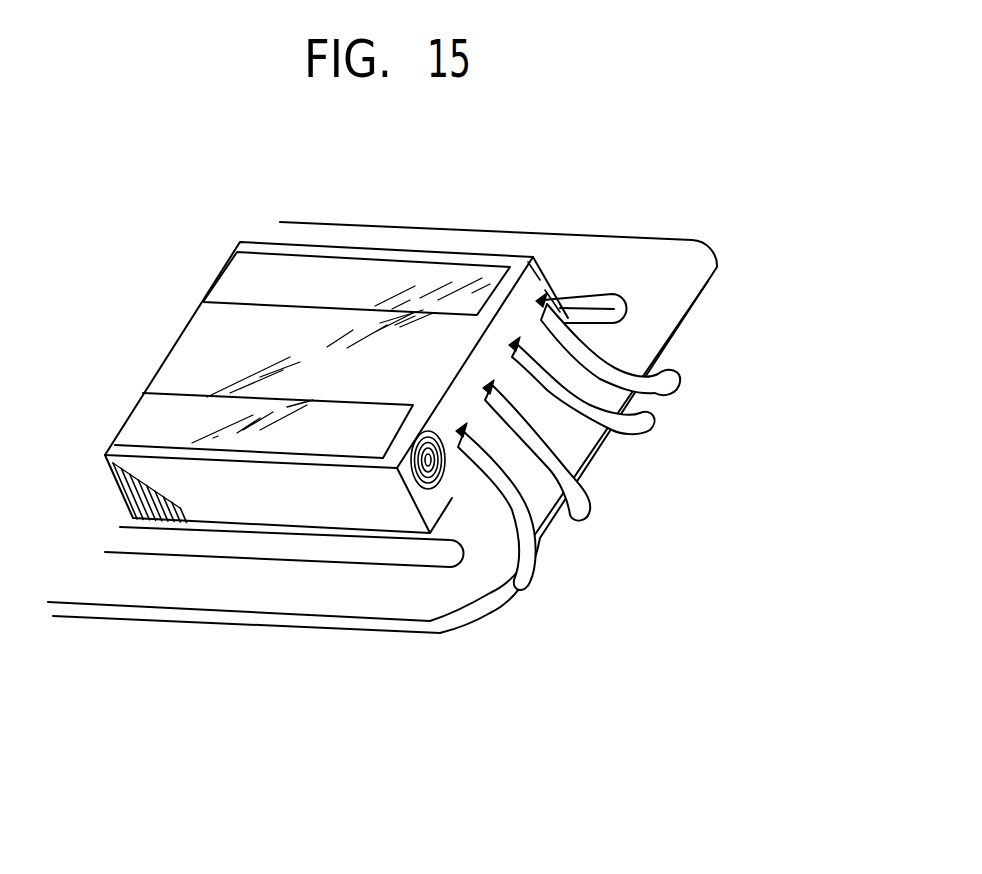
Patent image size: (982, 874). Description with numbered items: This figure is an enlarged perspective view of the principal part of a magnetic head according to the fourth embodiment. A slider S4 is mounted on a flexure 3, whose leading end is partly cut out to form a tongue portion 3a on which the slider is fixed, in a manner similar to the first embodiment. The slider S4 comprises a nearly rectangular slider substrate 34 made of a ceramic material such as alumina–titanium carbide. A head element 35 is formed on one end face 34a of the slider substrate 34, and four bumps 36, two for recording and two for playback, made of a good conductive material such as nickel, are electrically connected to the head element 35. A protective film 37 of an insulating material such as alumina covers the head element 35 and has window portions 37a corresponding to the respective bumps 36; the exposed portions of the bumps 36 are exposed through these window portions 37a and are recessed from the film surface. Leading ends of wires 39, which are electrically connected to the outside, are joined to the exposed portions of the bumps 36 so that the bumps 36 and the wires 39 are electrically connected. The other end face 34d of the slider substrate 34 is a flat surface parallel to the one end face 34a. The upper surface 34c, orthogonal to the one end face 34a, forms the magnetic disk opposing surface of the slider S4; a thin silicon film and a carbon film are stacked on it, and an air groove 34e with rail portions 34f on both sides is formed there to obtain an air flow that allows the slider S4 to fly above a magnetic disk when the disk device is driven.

The flexure 3 is at (720, 258).
The tongue portion 3a is at (268, 534).
The slider S4 is at (288, 425).
The slider substrate 34 is at (186, 316).
The one end face 34a is at (528, 280).
The upper surface 34c is at (223, 300).
The other end face 34d is at (120, 493).
The air groove 34e is at (263, 338).
The rail portions 34f is at (330, 423).
The head element 35 is at (436, 488).
The bumps 36 is at (512, 346).
The protective film 37 is at (537, 278).
The window portions 37a is at (547, 310).
The wires 39 is at (674, 370).